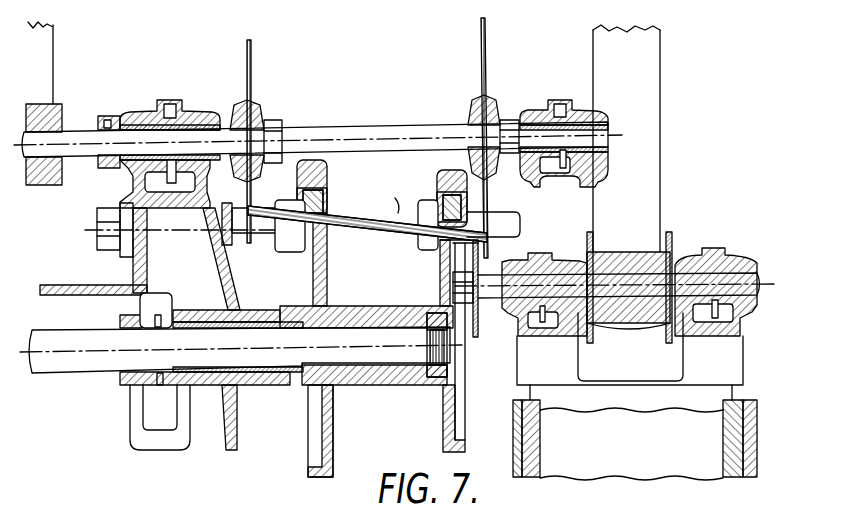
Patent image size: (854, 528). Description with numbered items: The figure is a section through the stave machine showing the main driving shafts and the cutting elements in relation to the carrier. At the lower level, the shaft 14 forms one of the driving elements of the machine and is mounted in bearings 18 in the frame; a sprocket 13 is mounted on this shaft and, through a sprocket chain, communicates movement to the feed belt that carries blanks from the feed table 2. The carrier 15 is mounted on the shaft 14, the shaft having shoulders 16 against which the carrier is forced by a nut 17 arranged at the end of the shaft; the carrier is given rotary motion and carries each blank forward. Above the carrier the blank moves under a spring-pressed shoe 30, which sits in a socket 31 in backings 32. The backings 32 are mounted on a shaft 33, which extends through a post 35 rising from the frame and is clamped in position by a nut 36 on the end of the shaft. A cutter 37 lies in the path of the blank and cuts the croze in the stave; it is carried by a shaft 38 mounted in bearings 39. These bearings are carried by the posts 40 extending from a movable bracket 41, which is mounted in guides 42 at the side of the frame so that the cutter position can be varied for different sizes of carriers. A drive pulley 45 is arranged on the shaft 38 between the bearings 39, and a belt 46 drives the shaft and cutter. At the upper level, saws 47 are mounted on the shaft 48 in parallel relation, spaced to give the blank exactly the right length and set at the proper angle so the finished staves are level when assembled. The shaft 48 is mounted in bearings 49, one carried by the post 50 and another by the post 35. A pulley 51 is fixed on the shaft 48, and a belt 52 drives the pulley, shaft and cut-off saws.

The feed table 2 is at (389, 192).
The sprocket 13 is at (150, 388).
The shaft 14 is at (188, 337).
The carrier 15 is at (327, 278).
The shoulders 16 is at (300, 357).
The nut 17 is at (427, 327).
The bearings 18 is at (263, 307).
The spring-pressed shoe 30 is at (327, 205).
The socket 31 is at (327, 190).
The backings 32 is at (295, 178).
The shaft 33 is at (365, 238).
The post 35 is at (226, 267).
The nut 36 is at (105, 235).
The cutter 37 is at (478, 335).
The shaft 38 is at (517, 280).
The bearings 39 is at (568, 248).
The posts 40 is at (565, 368).
The movable bracket 41 is at (663, 400).
The guides 42 is at (512, 432).
The drive pulley 45 is at (637, 247).
The belt 46 is at (645, 198).
The saws 47 is at (250, 63).
The shaft 48 is at (318, 128).
The bearings 49 is at (200, 107).
The post 50 is at (530, 195).
The pulley 51 is at (64, 112).
The belt 52 is at (43, 80).